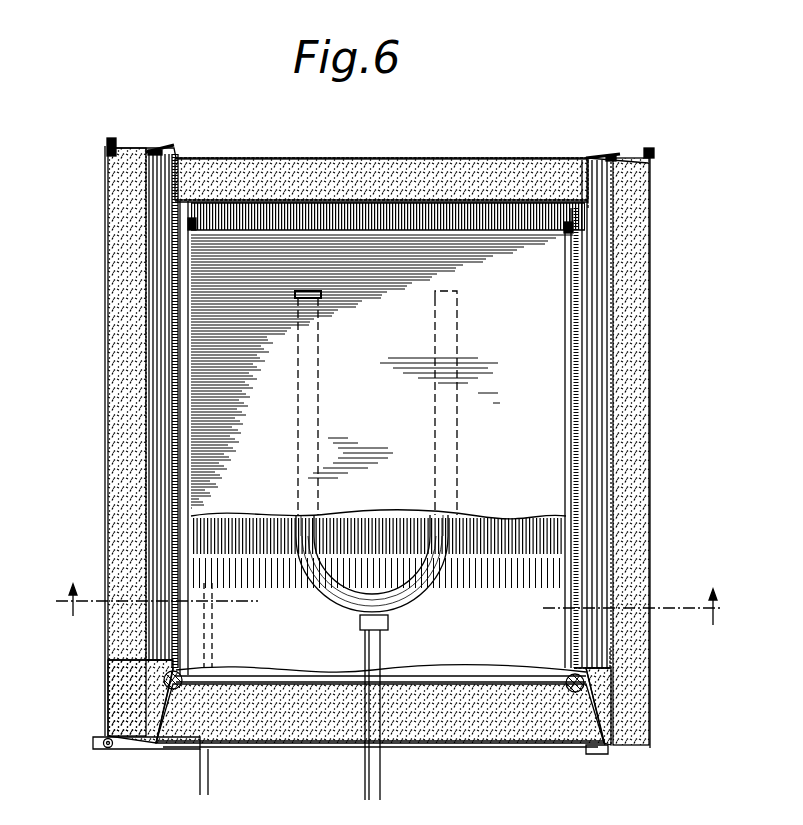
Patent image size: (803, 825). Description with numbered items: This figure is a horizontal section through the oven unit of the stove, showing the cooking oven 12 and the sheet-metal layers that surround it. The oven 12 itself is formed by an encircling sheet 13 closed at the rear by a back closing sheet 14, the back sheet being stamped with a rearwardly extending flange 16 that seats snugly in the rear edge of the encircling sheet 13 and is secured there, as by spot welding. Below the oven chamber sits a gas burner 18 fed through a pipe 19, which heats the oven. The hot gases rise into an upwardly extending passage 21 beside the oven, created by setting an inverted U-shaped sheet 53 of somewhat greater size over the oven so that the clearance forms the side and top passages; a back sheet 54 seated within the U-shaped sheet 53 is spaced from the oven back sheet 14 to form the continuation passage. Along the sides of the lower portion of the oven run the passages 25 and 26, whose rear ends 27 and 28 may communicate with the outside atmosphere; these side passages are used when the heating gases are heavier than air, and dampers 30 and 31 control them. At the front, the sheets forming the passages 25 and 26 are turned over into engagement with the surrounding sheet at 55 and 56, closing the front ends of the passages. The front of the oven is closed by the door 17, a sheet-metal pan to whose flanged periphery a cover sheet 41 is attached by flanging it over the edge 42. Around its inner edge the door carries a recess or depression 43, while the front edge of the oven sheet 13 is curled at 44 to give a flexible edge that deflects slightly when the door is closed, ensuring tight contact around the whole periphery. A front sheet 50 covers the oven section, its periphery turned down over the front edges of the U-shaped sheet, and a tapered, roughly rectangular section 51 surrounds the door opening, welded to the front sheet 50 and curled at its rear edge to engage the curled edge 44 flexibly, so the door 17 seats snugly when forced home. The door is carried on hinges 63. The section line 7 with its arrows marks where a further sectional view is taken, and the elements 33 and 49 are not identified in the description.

The section line 7- 7 is at (393, 603).
The cooking oven 12 is at (530, 350).
The encircling sheet 13 is at (186, 452).
The back closing sheet 14 is at (380, 218).
The rearwardly extending flange 16 is at (243, 160).
The door 17 is at (308, 403).
The gas burner 18 is at (442, 480).
The pipe 19 is at (372, 770).
The upwardly extending passage 21 is at (165, 388).
The side passage 25 is at (160, 462).
The side passage 26 is at (590, 440).
The rear end of side passage 27 is at (150, 182).
The rear end of side passage 28 is at (590, 190).
The damper 30 is at (150, 142).
The damper 31 is at (586, 150).
The inner liner 33 is at (165, 350).
The cover sheet 41 is at (200, 748).
The edge of peripheral portion 42 is at (130, 745).
The recess or depression 43 is at (195, 670).
The curled front edge portion 44 is at (168, 668).
The top cover plate 49 is at (478, 152).
The front sheet 50 is at (120, 712).
The rectangular section 51 is at (150, 682).
The inverted U-shaped sheet 53 is at (578, 297).
The back sheet 54 is at (300, 210).
The turned-over front portion 55 is at (160, 640).
The turned-over front portion 56 is at (608, 662).
The hinges 63 is at (100, 742).